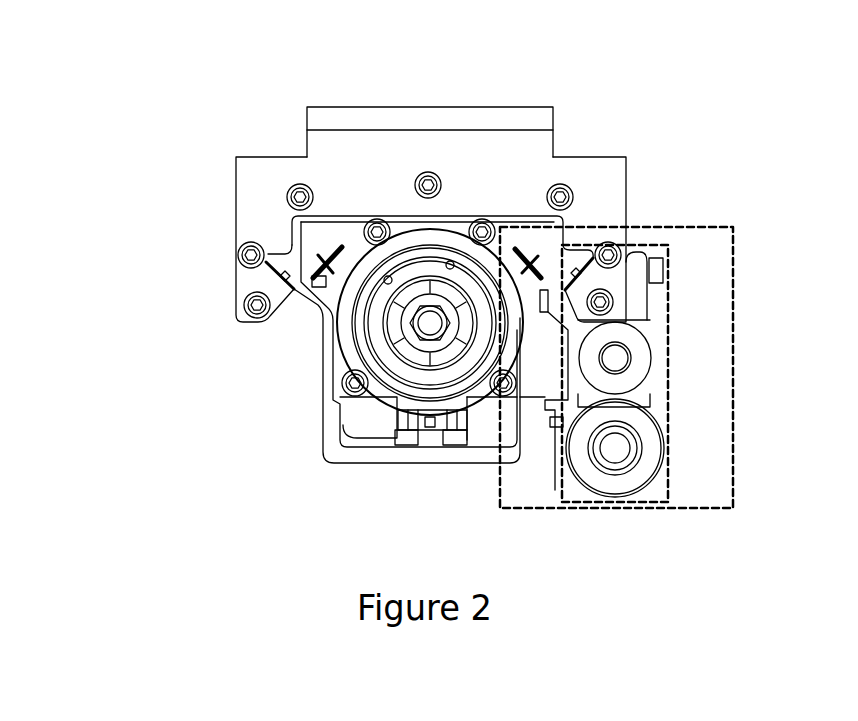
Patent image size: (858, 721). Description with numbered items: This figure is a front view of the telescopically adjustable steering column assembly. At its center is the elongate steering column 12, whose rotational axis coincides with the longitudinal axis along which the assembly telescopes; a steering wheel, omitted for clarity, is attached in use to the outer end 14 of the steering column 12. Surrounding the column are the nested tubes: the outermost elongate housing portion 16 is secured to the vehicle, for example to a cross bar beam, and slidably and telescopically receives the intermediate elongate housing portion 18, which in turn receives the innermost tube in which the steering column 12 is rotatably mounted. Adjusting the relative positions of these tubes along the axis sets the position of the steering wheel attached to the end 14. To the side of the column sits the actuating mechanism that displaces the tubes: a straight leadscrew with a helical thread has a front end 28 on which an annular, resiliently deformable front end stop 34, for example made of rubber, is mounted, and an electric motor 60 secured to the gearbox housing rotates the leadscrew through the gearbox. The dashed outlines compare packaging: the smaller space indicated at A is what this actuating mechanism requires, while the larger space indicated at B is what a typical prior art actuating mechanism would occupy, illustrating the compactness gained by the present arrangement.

The elongate steering column 12 is at (428, 323).
The outer end 14 is at (357, 388).
The outermost elongate housing portion 16 is at (432, 106).
The intermediate elongate housing portion 18 is at (263, 245).
The front end 28 is at (617, 358).
The front end stop 34 is at (635, 345).
The electric motor 60 is at (652, 438).
The packaging space A is at (668, 263).
The packaging space B is at (733, 323).